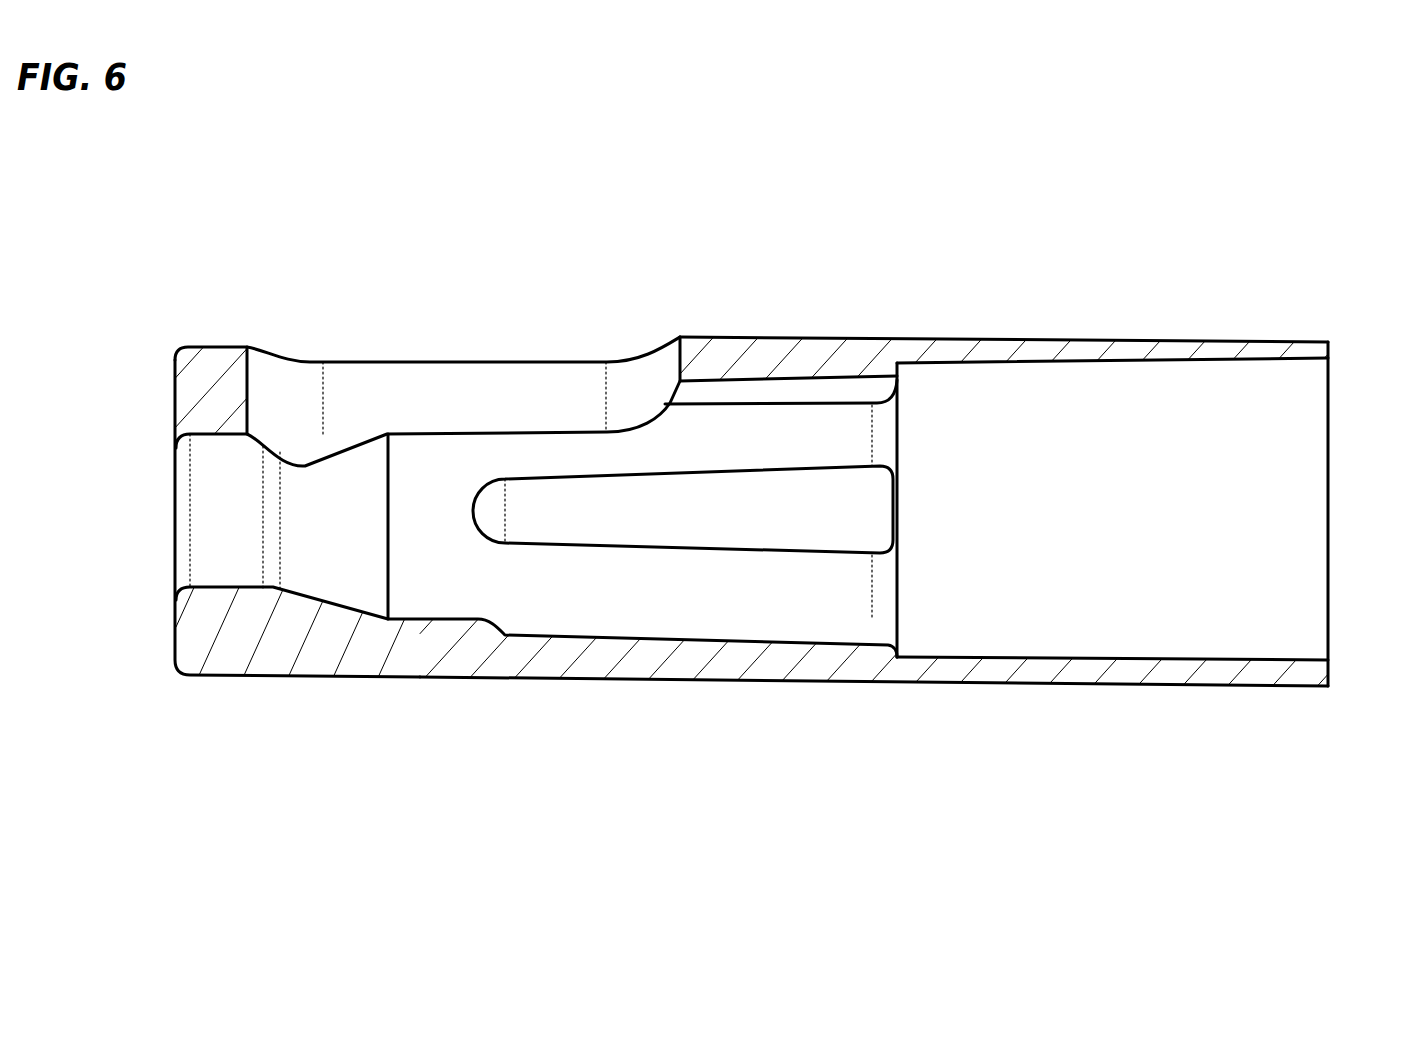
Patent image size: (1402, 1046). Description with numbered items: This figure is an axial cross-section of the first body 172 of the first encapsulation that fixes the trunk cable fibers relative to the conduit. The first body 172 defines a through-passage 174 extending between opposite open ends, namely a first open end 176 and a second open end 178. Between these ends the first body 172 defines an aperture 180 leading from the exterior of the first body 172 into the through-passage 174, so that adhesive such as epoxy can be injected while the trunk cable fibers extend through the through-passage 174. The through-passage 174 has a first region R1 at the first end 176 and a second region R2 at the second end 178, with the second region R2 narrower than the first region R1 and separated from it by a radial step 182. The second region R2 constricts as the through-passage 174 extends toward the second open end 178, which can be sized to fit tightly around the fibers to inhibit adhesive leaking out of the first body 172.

The first body 172 is at (541, 680).
The through-passage 174 is at (990, 365).
The first open end 176 is at (1330, 355).
The second open end 178 is at (173, 635).
The aperture 180 is at (246, 371).
The radial step 182 is at (898, 382).
The first region R1 is at (1325, 697).
The second region R2 is at (905, 695).